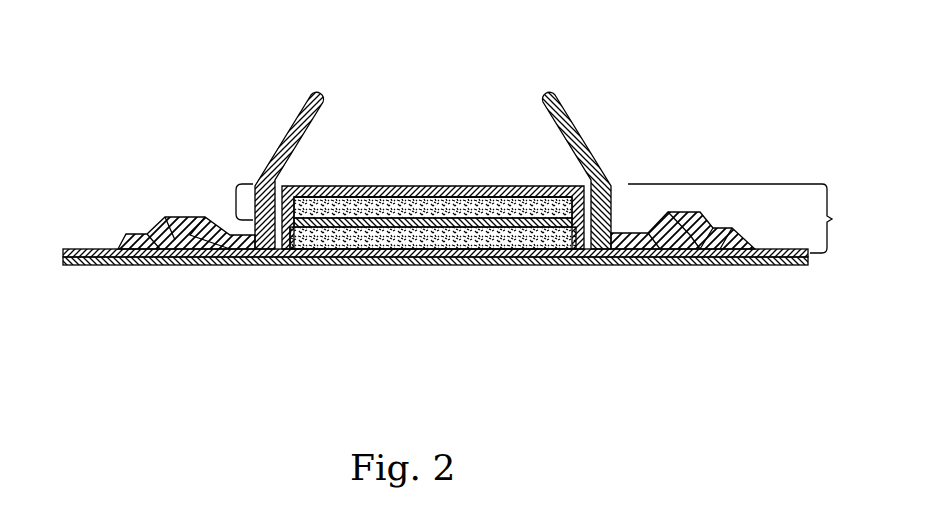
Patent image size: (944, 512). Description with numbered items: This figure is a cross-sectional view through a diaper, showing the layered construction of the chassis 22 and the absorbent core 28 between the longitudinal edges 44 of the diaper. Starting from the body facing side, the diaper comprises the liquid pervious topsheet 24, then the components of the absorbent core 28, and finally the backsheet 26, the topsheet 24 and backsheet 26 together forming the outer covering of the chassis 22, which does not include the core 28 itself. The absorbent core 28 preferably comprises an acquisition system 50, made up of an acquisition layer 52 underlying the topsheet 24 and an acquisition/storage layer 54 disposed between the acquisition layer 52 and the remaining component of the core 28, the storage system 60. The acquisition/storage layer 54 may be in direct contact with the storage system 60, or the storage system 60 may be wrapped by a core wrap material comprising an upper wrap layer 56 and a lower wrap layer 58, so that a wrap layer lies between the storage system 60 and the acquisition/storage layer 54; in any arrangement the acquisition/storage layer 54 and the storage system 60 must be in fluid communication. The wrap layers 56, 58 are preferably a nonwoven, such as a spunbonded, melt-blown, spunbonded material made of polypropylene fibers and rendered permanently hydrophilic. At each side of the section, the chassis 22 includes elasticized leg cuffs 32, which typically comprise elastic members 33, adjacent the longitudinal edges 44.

The chassis 22 is at (429, 185).
The topsheet 24 is at (350, 180).
The backsheet 26 is at (400, 256).
The absorbent core 28 is at (748, 218).
The elasticized leg cuffs 32 is at (250, 138).
The elastic members 33 is at (313, 93).
The longitudinal edges 44 is at (60, 262).
The acquisition system 50 is at (236, 206).
The acquisition layer 52 is at (480, 218).
The acquisition/storage layer 54 is at (325, 187).
The upper wrap layer 56 is at (387, 205).
The lower wrap layer 58 is at (500, 245).
The storage system 60 is at (312, 240).